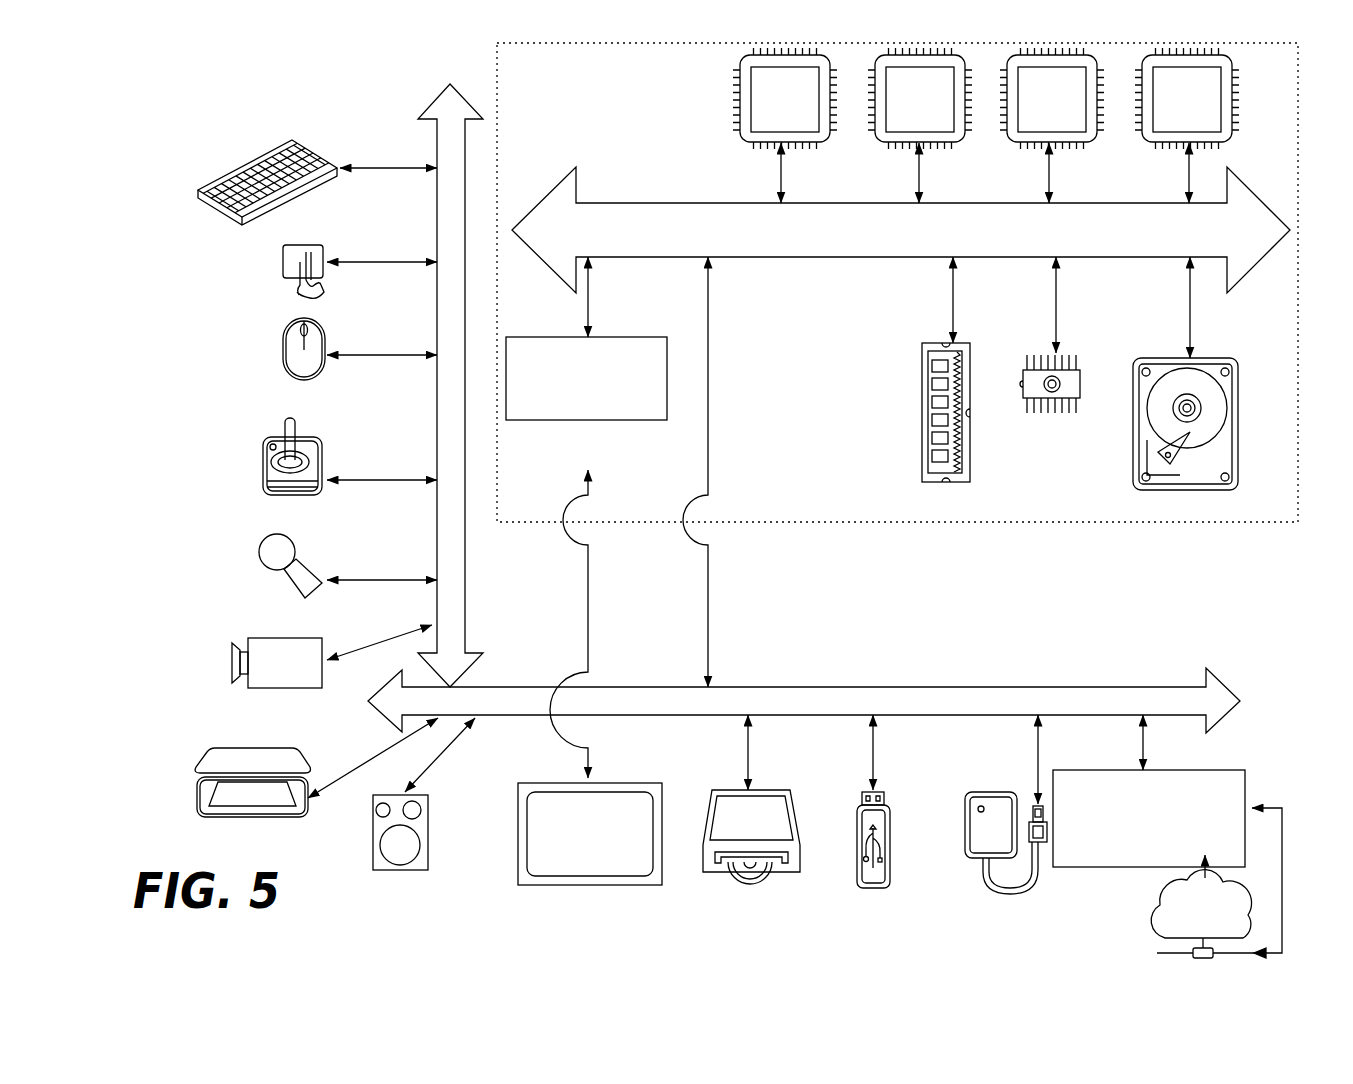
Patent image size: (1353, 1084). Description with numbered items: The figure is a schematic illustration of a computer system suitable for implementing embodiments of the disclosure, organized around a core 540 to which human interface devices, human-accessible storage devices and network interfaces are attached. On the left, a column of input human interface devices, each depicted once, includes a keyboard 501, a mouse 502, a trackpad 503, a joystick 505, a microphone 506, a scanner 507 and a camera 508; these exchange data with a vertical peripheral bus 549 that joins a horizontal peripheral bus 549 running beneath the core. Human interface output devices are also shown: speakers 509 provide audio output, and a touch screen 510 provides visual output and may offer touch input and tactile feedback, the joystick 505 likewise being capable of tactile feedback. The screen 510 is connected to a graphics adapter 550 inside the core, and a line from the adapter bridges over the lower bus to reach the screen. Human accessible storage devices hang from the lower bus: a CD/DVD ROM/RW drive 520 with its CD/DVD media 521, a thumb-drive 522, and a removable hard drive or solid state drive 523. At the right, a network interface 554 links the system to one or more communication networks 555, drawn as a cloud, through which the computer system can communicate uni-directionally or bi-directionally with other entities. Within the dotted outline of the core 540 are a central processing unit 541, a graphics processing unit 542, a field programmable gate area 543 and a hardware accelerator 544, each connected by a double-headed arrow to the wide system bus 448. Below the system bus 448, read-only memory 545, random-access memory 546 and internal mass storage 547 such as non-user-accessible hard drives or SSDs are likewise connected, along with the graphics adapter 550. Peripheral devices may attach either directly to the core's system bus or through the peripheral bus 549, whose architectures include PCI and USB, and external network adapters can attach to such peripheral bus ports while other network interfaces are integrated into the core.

The keyboard 501 is at (198, 197).
The mouse 502 is at (283, 345).
The trackpad 503 is at (283, 262).
The joystick 505 is at (263, 478).
The microphone 506 is at (262, 548).
The scanner 507 is at (197, 805).
The camera 508 is at (232, 662).
The speakers 509 is at (402, 872).
The touch screen 510 is at (588, 886).
The CD/DVD ROM/RW 520 is at (804, 878).
The CD/DVD media 521 is at (735, 878).
The thumb-drive 522 is at (876, 889).
The removable hard drive or solid state drive 523 is at (980, 860).
The core 540 is at (893, 522).
The Central Processing Unit 541 is at (785, 125).
The Graphics Processing Unit 542 is at (920, 125).
The Field Programmable Gate Area 543 is at (1052, 125).
The hardware accelerator 544 is at (1187, 125).
The Read-only memory 545 is at (1045, 413).
The Random-access memory 546 is at (918, 440).
The internal mass storage 547 is at (1147, 352).
The system bus 448 is at (901, 230).
The peripheral bus 549 is at (437, 131).
The graphics adapter 550 is at (586, 517).
The network interface 554 is at (1149, 791).
The communication network 555 is at (1160, 925).